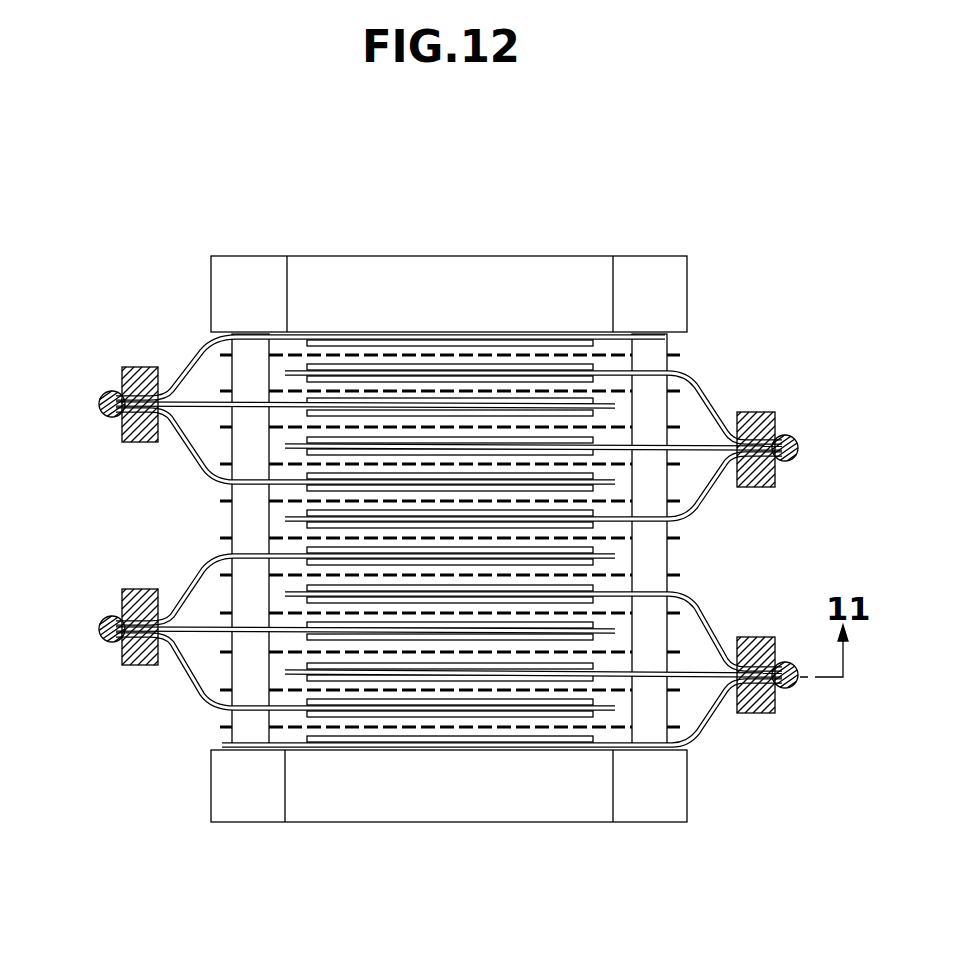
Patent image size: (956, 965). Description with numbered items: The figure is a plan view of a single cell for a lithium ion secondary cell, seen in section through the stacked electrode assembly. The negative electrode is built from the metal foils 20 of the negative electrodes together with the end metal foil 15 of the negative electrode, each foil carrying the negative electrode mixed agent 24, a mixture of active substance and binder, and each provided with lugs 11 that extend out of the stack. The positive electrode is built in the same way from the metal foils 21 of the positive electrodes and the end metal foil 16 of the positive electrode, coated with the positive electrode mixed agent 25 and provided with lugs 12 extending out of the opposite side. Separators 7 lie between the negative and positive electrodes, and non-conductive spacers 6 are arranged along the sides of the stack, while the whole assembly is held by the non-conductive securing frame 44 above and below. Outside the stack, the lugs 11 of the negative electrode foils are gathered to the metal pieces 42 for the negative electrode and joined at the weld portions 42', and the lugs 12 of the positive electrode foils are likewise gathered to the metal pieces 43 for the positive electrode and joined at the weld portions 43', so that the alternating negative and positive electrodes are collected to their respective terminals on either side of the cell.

The non-conductive spacers 6 is at (243, 718).
The separators 7 is at (568, 355).
The lugs of the metal foils of the negative electrodes 11 is at (203, 352).
The lugs of the metal foils of the positive electrodes 12 is at (293, 672).
The end metal foil of the negative electrode 15 is at (483, 335).
The end metal foil of the positive electrode 16 is at (416, 748).
The metal foils of the negative electrodes 20 is at (419, 403).
The metal foils of the positive electrodes 21 is at (500, 676).
The mixed agent for the negative electrode 24 is at (341, 337).
The mixed agent for the positive electrode 25 is at (569, 748).
The metal pieces for the negative electrode 42 is at (108, 369).
The weld portions 42' is at (87, 443).
The metal pieces for the positive electrode 43 is at (779, 422).
The weld portions 43' is at (816, 471).
The non-conductive securing frame 44 is at (540, 272).